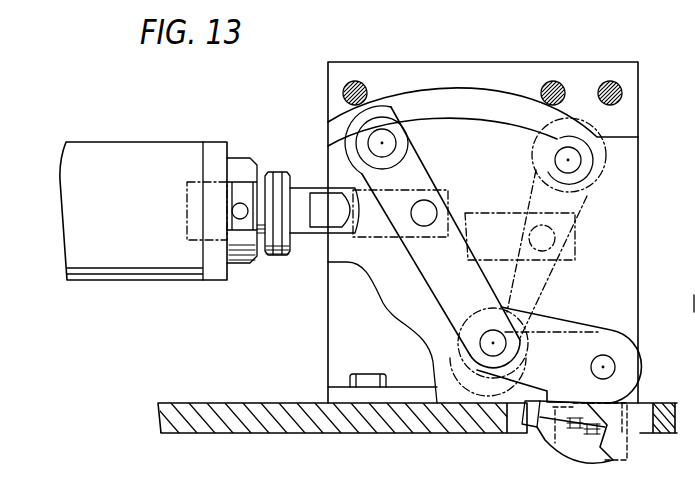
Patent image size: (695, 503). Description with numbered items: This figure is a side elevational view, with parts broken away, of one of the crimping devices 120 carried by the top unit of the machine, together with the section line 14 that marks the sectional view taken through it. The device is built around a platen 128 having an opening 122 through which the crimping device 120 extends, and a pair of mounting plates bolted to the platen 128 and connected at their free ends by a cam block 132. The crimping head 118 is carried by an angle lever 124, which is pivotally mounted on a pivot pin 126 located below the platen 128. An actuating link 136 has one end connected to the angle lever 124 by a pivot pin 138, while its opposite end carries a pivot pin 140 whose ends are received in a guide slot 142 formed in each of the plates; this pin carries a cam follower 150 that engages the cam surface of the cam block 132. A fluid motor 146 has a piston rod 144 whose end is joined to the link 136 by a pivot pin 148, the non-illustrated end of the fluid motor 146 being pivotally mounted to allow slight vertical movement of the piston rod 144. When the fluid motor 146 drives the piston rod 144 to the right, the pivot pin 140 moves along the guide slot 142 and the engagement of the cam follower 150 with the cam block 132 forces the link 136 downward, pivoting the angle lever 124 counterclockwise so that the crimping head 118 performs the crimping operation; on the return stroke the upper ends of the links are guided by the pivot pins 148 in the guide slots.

The section line 14- 14 is at (653, 97).
The crimping head 118 is at (580, 457).
The crimping device 120 is at (300, 340).
The opening 122 is at (641, 431).
The angle lever 124 is at (567, 321).
The pivot pin 126 is at (612, 365).
The platen 128 is at (209, 400).
The cam block 132 is at (441, 72).
The actuating link 136 is at (431, 279).
The pivot pin 138 is at (484, 345).
The pivot pin 140 is at (384, 137).
The guide slot 142 is at (498, 124).
The piston rod 144 is at (302, 244).
The fluid motor 146 is at (137, 204).
The pivot pin 148 is at (430, 211).
The cam follower 150 is at (351, 148).